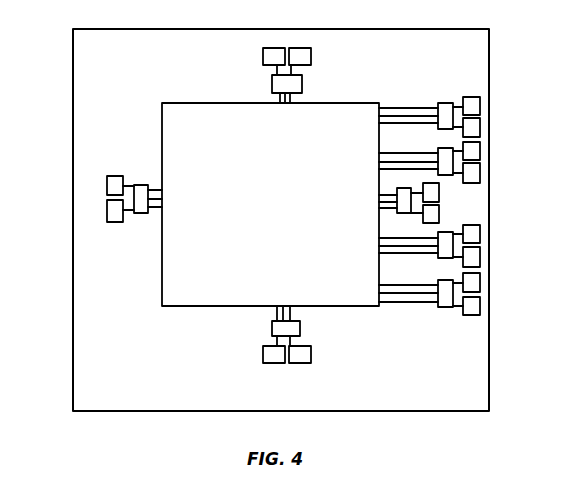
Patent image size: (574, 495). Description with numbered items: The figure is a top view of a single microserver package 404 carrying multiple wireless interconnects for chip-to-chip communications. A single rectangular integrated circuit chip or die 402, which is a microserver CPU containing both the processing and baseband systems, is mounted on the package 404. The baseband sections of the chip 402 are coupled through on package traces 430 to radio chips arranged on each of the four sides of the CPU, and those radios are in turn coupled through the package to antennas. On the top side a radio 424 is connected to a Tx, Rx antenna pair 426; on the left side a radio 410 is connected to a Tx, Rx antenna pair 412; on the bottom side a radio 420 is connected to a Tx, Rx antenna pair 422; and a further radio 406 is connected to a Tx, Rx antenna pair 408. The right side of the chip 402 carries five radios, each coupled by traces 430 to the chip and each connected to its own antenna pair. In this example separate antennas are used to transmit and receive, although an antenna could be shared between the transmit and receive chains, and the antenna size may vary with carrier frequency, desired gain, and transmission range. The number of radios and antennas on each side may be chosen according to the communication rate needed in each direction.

The integrated circuit chip 402 is at (193, 103).
The package 404 is at (73, 48).
The radio 406 is at (405, 187).
The Tx, Rx antenna pair 408 is at (439, 213).
The radio 410 is at (141, 213).
The Tx, Rx antenna pair 412 is at (112, 222).
The radio 420 is at (300, 326).
The Tx, Rx antenna pair 422 is at (311, 356).
The radio 424 is at (302, 84).
The Tx, Rx antenna pair 426 is at (311, 57).
The on package traces 430 is at (277, 99).